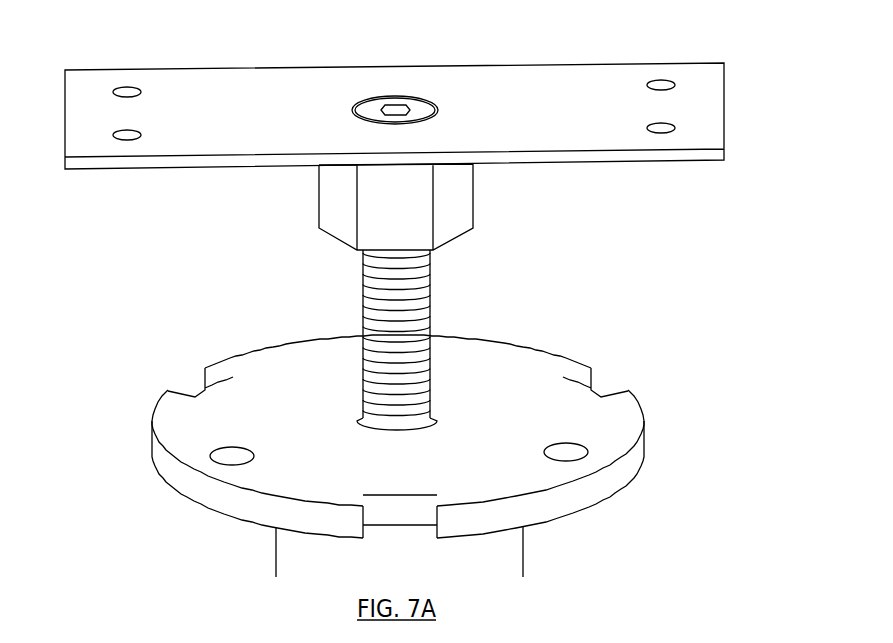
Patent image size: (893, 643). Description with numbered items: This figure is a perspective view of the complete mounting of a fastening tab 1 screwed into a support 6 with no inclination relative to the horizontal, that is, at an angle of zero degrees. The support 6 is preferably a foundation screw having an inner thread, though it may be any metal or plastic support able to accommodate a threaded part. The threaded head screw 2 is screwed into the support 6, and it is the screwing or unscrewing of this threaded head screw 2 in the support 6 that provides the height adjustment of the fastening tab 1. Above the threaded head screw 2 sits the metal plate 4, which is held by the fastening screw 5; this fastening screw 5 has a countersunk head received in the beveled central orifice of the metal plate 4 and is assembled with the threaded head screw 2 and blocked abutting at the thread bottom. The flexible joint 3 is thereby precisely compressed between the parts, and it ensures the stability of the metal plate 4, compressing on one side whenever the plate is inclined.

The fastening tab 1 is at (582, 297).
The threaded head screw 2 is at (365, 320).
The flexible joint 3 is at (335, 166).
The metal plate 4 is at (695, 100).
The fastening screw 5 is at (378, 97).
The support 6 is at (628, 468).